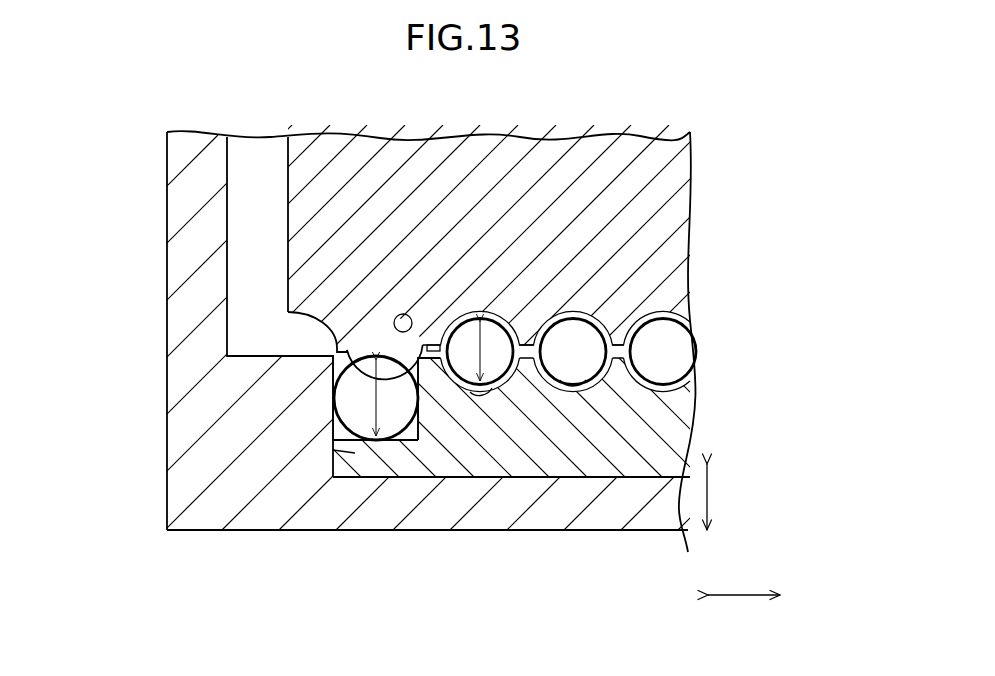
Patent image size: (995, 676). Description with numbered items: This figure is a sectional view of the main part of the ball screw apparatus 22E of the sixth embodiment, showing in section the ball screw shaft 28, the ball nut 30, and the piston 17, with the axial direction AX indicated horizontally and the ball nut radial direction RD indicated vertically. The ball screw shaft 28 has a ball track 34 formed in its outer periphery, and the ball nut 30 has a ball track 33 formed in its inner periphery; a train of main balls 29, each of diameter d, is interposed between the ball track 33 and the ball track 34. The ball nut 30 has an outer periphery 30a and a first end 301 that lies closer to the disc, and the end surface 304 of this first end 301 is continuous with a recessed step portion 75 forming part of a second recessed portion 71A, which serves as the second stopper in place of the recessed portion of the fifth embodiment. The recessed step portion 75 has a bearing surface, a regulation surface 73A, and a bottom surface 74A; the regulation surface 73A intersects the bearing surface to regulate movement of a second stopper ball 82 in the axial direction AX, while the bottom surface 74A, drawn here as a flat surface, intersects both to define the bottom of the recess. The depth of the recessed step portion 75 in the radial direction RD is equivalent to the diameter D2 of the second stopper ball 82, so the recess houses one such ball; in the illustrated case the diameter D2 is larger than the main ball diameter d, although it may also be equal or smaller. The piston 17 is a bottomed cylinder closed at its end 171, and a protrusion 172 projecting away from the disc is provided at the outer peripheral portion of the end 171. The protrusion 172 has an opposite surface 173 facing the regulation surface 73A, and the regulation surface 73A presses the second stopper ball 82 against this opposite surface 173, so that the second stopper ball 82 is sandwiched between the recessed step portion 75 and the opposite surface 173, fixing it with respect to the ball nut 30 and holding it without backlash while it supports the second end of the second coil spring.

The piston 17 is at (162, 507).
The end of the piston 171 is at (183, 532).
The protrusion 172 is at (308, 408).
The opposite surface 173 is at (333, 382).
The bottom surface 74A is at (330, 428).
The first end of the ball nut 301 is at (333, 450).
The end surface 304 is at (343, 470).
The ball nut 30 is at (492, 480).
The outer periphery of the ball nut 30a is at (340, 479).
The regulation surface 73A is at (416, 443).
The ball screw apparatus 22E is at (641, 127).
The ball screw shaft 28 is at (527, 135).
The second stopper ball 82 is at (340, 355).
The ball track 34 is at (433, 345).
The diameter of the main ball d is at (427, 347).
The main ball 29 is at (640, 335).
The ball track 33 is at (490, 392).
The recessed step portion 75 is at (405, 484).
The second recessed portion 71A is at (472, 612).
The diameter of the second stopper ball D2 is at (367, 442).
The ball nut radial direction RD is at (710, 495).
The axial direction AX is at (746, 593).